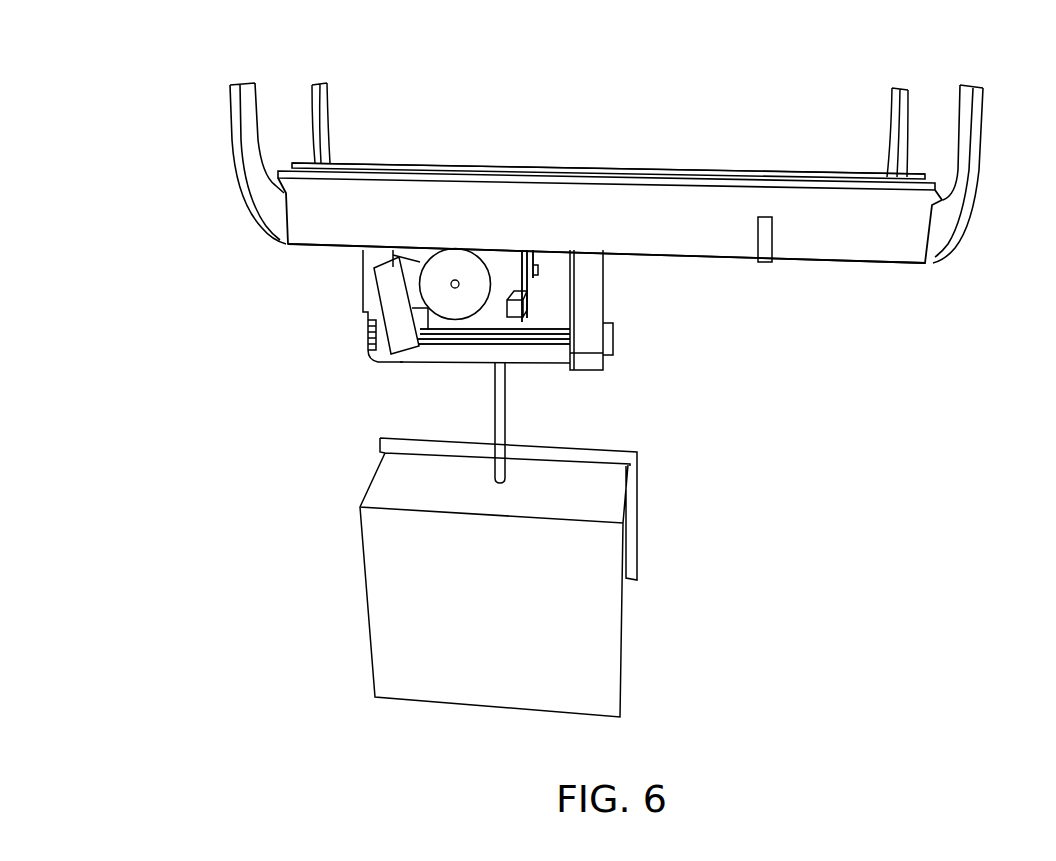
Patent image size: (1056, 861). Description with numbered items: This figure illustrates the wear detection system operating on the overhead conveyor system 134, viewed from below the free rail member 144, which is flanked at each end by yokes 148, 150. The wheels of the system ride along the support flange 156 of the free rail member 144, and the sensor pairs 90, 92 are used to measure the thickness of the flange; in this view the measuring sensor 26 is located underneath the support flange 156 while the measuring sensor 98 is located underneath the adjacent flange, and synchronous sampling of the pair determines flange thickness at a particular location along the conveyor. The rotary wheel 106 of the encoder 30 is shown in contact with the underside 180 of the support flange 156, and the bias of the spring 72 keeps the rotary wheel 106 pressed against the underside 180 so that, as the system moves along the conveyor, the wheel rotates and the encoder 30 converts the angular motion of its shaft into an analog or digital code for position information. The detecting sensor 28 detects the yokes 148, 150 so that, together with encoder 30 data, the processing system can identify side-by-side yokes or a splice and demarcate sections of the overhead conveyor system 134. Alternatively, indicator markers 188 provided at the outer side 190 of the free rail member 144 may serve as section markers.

The measuring sensor 26 is at (515, 314).
The detecting sensor 28 is at (609, 338).
The encoder 30 is at (420, 240).
The spring 72 is at (432, 350).
The sensor pair 90 is at (502, 316).
The sensor pair 92 is at (498, 324).
The measuring sensor 98 is at (535, 280).
The rotary wheel 106 is at (456, 253).
The overhead conveyor system 134 is at (690, 168).
The free rail member 144 is at (801, 168).
The yoke 148 is at (262, 202).
The yoke 150 is at (943, 213).
The support flange 156 is at (816, 262).
The underside 180 is at (636, 257).
The indicator marker 188 is at (772, 230).
The outer side 190 is at (504, 195).